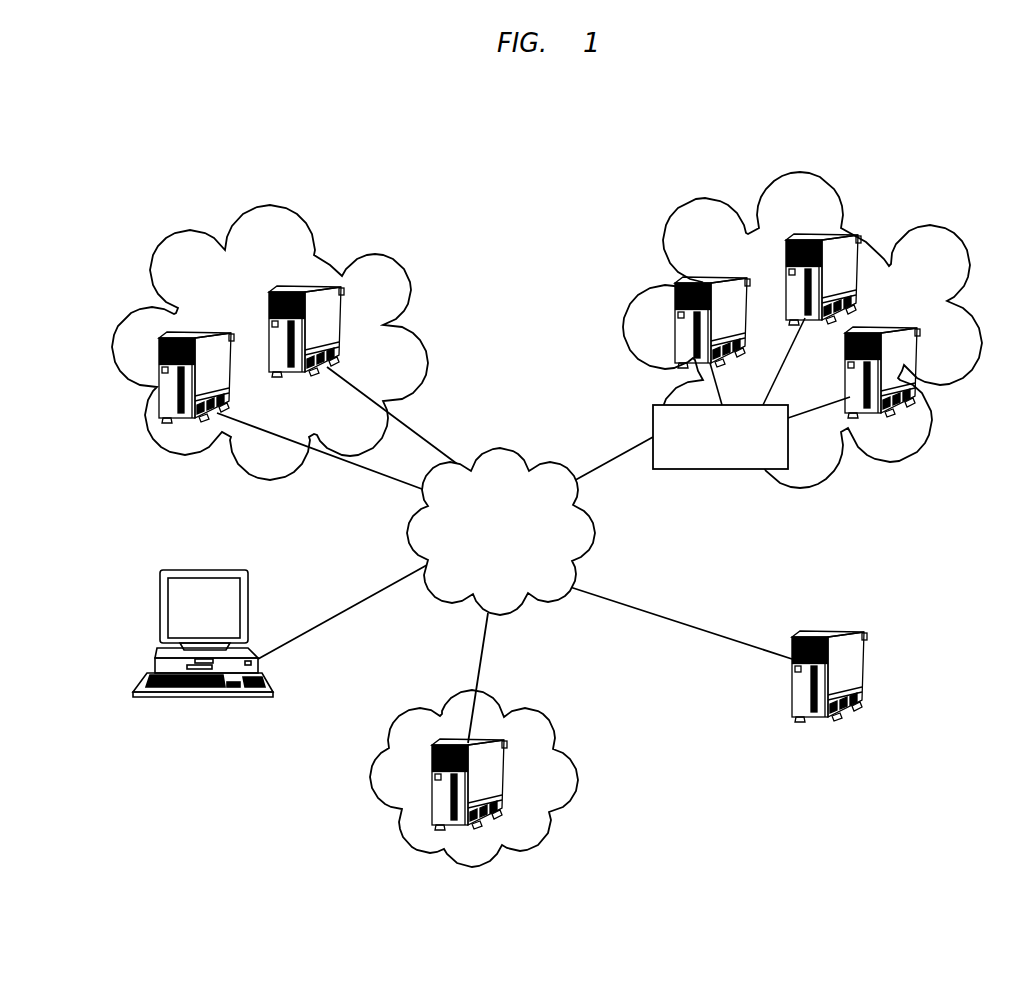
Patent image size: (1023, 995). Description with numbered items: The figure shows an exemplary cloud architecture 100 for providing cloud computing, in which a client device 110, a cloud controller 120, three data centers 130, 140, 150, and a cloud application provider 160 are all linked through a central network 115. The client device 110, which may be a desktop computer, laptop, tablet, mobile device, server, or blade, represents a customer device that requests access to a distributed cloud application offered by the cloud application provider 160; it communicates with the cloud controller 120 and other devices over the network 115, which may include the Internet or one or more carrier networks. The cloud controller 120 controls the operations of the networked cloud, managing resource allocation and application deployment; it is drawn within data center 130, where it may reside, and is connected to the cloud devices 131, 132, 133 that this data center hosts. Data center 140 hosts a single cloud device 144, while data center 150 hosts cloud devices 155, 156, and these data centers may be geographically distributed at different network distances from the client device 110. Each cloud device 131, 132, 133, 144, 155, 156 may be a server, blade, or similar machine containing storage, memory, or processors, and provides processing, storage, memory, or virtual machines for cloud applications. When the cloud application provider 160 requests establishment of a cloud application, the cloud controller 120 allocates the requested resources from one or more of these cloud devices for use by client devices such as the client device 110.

The cloud architecture 100 is at (118, 172).
The client device 110 is at (220, 570).
The network 115 is at (523, 452).
The cloud controller 120 is at (705, 472).
The data center 130 is at (937, 250).
The cloud device 131 is at (732, 280).
The cloud device 132 is at (842, 231).
The cloud device 133 is at (902, 328).
The data center 140 is at (577, 756).
The cloud device 144 is at (487, 742).
The data center 150 is at (412, 303).
The cloud device 155 is at (214, 333).
The cloud device 156 is at (323, 288).
The cloud application provider 160 is at (850, 633).